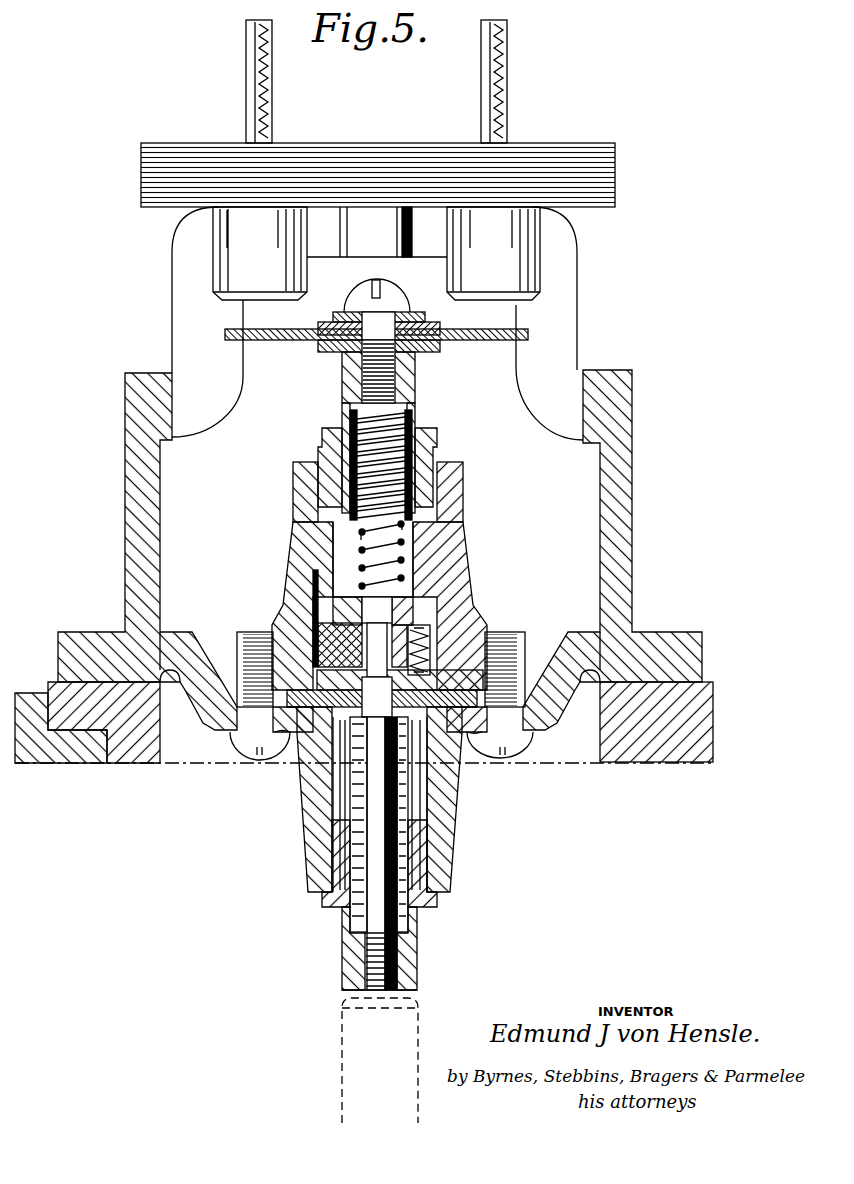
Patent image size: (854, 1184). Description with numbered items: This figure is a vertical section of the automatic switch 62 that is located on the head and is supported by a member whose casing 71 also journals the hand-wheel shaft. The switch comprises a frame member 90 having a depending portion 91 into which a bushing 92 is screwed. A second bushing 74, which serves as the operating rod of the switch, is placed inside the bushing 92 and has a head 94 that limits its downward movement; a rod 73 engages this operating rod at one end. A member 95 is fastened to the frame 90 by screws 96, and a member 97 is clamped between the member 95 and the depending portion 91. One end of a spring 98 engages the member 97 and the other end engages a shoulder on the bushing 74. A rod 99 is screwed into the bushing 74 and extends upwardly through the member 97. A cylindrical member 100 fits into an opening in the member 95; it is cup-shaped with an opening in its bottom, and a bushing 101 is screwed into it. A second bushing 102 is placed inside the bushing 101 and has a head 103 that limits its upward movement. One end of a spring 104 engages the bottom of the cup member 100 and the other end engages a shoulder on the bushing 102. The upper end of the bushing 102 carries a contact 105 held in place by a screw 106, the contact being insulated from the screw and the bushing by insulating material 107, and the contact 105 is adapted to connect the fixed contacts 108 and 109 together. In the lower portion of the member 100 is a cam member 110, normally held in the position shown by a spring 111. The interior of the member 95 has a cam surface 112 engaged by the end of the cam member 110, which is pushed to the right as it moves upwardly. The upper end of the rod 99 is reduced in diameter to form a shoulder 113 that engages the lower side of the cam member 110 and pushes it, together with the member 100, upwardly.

The automatic switch 62 is at (346, 323).
The casing 71 is at (697, 718).
The rod 73 is at (350, 1031).
The bushing 74 is at (417, 938).
The frame member 90 is at (640, 643).
The depending portion 91 is at (450, 823).
The bushing 92 is at (427, 866).
The head 94 is at (333, 827).
The member 95 is at (452, 533).
The screws 96 is at (250, 633).
The member 97 is at (360, 782).
The spring 98 is at (357, 793).
The rod 99 is at (375, 920).
The cylindrical member 100 is at (330, 527).
The bushing 101 is at (322, 437).
The bushing 102 is at (345, 390).
The head 103 is at (420, 507).
The spring 104 is at (440, 562).
The contact 105 is at (491, 340).
The screw 106 is at (383, 318).
The insulating material 107 is at (325, 348).
The fixed contact 108 is at (493, 160).
The fixed contact 109 is at (260, 160).
The cam member 110 is at (325, 633).
The spring 111 is at (433, 627).
The cam surface 112 is at (317, 570).
The shoulder 113 is at (385, 686).